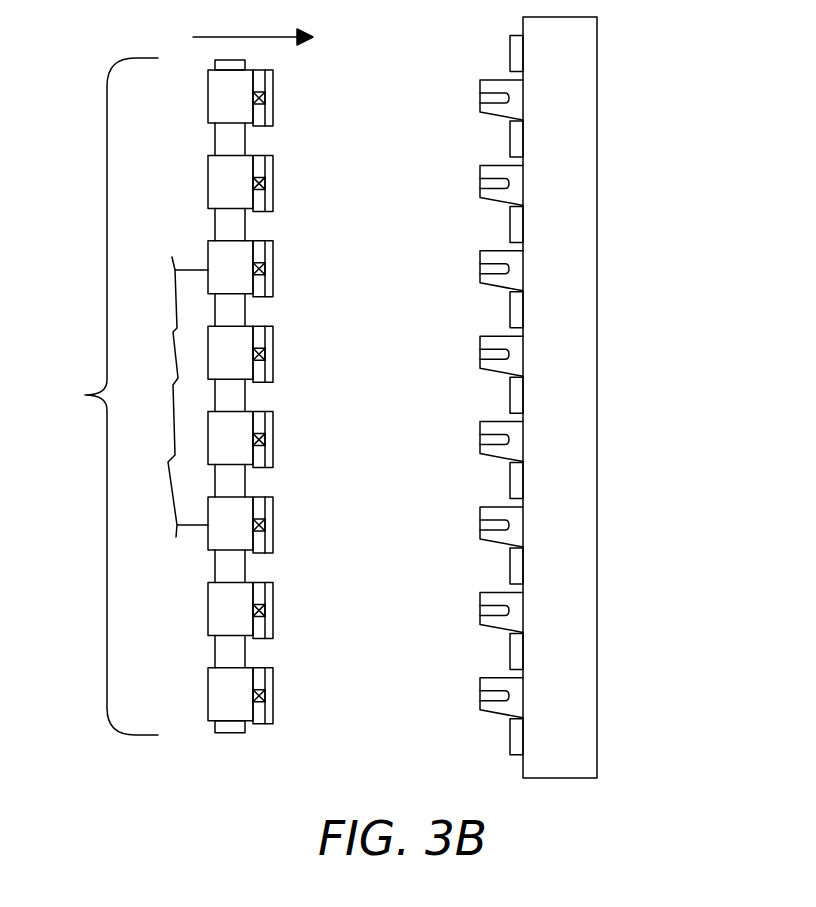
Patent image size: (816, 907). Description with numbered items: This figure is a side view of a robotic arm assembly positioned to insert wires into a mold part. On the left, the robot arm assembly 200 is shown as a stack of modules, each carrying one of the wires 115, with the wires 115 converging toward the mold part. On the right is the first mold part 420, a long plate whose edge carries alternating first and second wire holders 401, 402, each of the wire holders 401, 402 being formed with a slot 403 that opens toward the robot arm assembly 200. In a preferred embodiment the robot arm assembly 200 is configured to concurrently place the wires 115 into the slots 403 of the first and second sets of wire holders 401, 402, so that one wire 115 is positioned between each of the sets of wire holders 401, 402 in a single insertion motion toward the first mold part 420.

The wires 115 is at (259, 696).
The robot arm assembly 200 is at (155, 396).
The first wire holders 401 is at (462, 425).
The second wire holders 402 is at (462, 333).
The slots 403 is at (433, 388).
The first mold part 420 is at (613, 17).